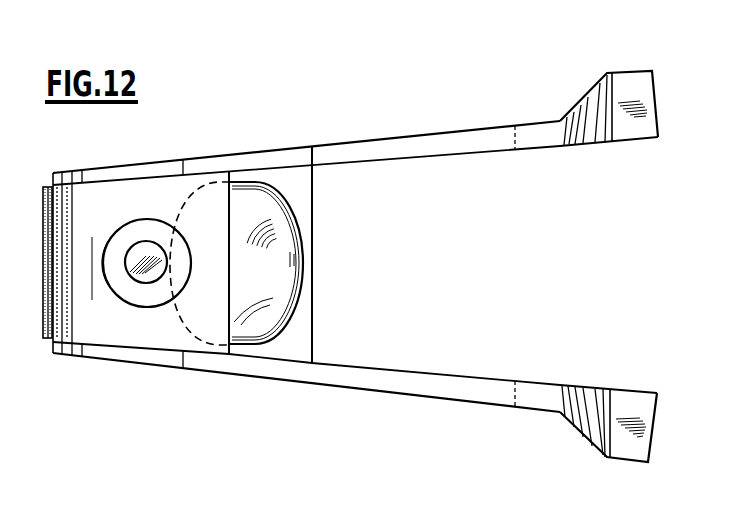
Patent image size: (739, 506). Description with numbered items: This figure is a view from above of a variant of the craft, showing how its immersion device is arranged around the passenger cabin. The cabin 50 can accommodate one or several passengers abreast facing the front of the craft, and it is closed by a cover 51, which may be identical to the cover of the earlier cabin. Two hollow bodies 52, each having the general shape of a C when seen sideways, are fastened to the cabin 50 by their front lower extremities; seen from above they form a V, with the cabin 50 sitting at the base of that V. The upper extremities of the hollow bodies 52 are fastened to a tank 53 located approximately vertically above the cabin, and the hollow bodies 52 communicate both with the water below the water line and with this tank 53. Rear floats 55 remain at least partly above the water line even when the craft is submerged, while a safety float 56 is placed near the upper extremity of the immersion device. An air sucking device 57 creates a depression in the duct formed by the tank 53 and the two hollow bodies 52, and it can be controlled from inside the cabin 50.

The cabin 50 is at (303, 312).
The cover 51 is at (236, 263).
The hollow bodies 52 is at (435, 146).
The tank 53 is at (146, 278).
The rear floats 55 is at (620, 83).
The safety float 56 is at (95, 173).
The air sucking device 57 is at (143, 247).